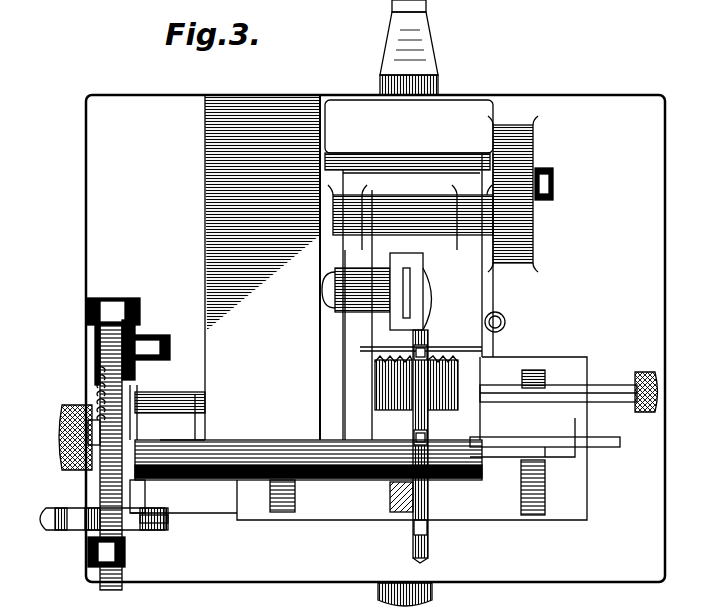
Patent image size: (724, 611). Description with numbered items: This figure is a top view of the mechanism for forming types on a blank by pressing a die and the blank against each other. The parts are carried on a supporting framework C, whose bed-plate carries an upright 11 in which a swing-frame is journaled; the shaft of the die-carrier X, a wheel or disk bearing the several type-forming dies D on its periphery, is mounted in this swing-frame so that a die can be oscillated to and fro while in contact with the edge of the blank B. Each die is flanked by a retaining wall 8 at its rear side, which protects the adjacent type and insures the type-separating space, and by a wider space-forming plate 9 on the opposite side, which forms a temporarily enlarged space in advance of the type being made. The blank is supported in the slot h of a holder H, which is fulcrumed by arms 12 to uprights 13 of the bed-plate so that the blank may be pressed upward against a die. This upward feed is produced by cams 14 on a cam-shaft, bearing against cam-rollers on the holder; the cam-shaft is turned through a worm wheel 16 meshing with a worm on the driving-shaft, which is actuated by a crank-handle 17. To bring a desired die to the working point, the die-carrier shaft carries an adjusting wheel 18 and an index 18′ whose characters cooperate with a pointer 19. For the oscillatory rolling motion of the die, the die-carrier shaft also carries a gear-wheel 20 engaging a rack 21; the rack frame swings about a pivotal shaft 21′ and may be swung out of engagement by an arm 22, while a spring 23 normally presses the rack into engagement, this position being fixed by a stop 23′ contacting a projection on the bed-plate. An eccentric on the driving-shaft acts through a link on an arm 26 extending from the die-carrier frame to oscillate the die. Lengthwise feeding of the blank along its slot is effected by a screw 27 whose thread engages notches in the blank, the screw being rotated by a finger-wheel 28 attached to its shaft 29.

The crank-handle 17 is at (432, 58).
The uprights 13 is at (520, 170).
The arms 12 is at (354, 259).
The space-forming die or plate 9 is at (413, 350).
The type-forming die D is at (428, 347).
The retaining wall 8 is at (482, 347).
The arm 26 is at (356, 366).
The screw 27 is at (484, 381).
The shaft 29 is at (660, 396).
The finger-wheel 28 is at (643, 378).
The holder H is at (412, 438).
The blank-supporting slot h is at (547, 449).
The blank B is at (545, 452).
The upright 11 is at (216, 377).
The cams 14 is at (296, 499).
The worm wheel 16 is at (392, 498).
The die-carrier X is at (413, 565).
The supporting framework C is at (262, 267).
The pivotal shaft 21′ is at (116, 300).
The spring 23 is at (100, 383).
The stop 23′ is at (169, 352).
The adjusting wheel 18 is at (163, 380).
The rack 21 is at (98, 477).
The index 18′ is at (135, 510).
The arm 22 is at (42, 524).
The pointer 19 is at (168, 518).
The gear-wheel 20 is at (90, 548).